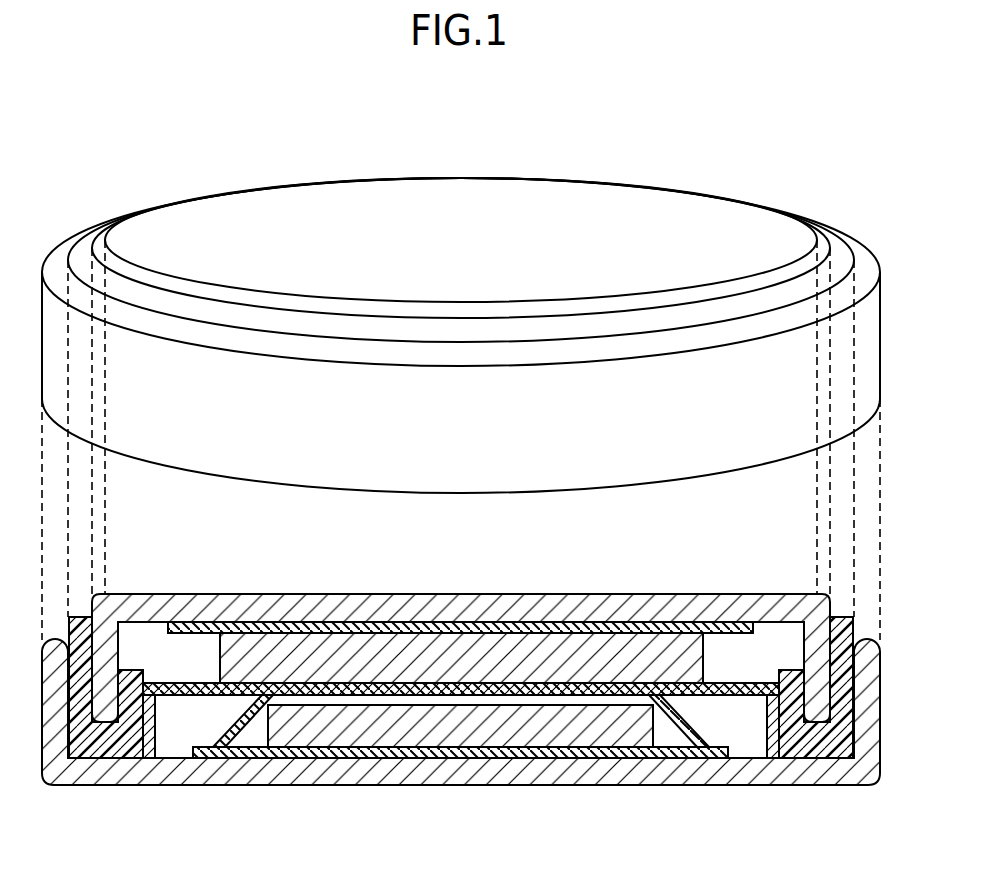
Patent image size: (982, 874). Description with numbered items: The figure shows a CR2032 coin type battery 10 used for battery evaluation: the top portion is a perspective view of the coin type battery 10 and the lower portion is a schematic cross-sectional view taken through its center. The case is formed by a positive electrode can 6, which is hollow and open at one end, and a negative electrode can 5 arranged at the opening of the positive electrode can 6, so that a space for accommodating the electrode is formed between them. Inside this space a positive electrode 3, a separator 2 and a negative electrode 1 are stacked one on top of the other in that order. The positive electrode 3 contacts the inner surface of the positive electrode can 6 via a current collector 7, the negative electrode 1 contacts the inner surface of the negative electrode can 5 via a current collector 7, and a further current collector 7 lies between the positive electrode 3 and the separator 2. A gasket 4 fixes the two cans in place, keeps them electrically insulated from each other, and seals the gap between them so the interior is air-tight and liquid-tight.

The coin type battery 10 is at (97, 162).
The negative electrode 1 is at (403, 648).
The separator 2 is at (750, 695).
The positive electrode 3 is at (462, 728).
The gasket 4 is at (107, 740).
The negative electrode can 5 is at (588, 606).
The positive electrode can 6 is at (682, 773).
The current collector 7 is at (186, 634).